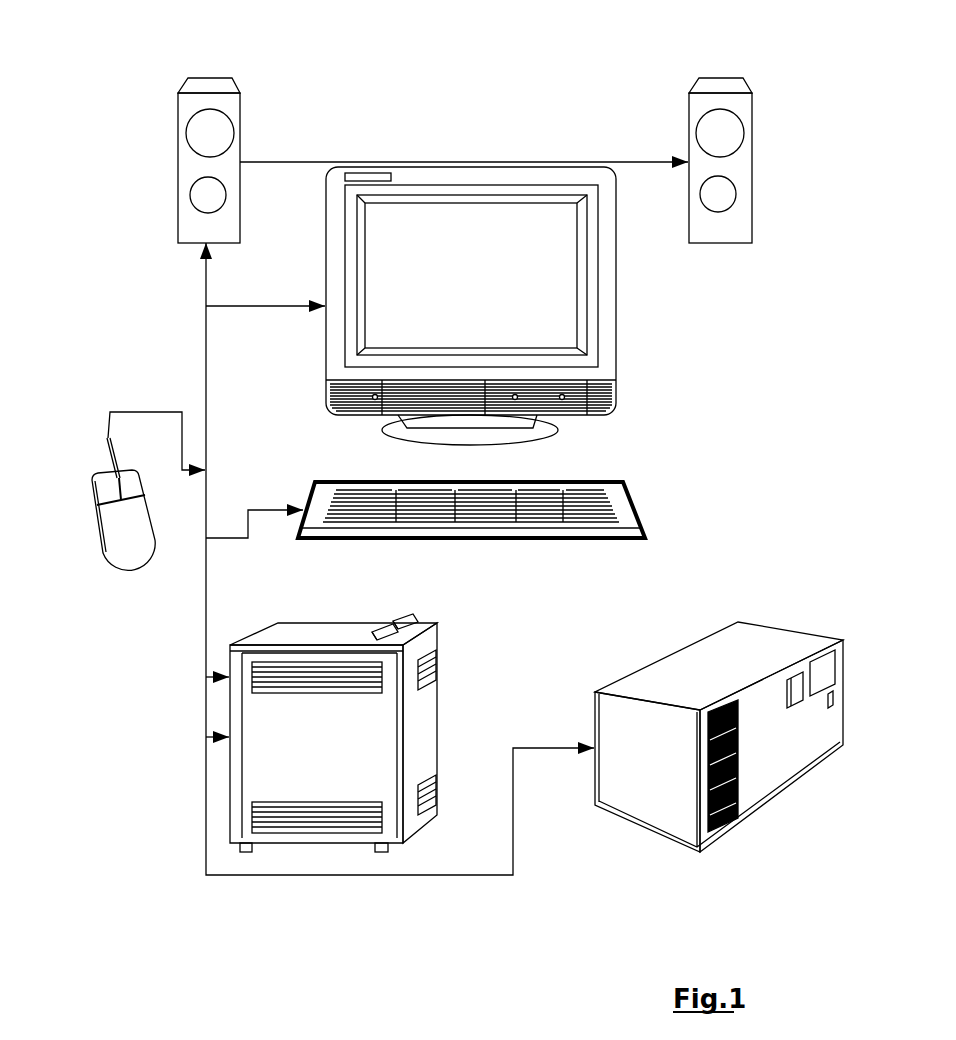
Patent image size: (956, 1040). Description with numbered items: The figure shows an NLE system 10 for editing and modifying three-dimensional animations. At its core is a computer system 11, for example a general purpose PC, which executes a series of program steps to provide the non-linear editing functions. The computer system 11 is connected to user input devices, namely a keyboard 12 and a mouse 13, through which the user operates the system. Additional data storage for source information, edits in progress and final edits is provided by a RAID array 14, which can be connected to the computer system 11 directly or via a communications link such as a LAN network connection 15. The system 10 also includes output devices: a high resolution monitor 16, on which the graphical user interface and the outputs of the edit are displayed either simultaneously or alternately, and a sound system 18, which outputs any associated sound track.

The NLE system 10 is at (746, 310).
The computer system 11 is at (439, 624).
The keyboard 12 is at (643, 509).
The mouse 13 is at (100, 548).
The RAID array 14 is at (720, 638).
The LAN network connection 15 is at (381, 518).
The monitor 16 is at (471, 306).
The sound system 18 is at (240, 86).